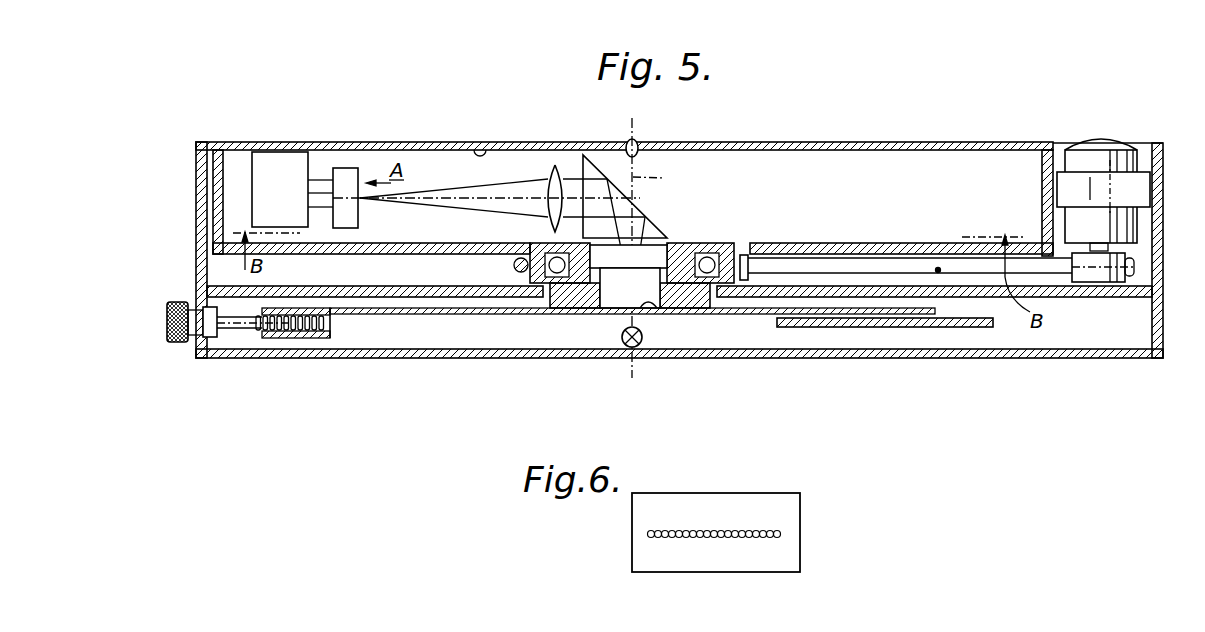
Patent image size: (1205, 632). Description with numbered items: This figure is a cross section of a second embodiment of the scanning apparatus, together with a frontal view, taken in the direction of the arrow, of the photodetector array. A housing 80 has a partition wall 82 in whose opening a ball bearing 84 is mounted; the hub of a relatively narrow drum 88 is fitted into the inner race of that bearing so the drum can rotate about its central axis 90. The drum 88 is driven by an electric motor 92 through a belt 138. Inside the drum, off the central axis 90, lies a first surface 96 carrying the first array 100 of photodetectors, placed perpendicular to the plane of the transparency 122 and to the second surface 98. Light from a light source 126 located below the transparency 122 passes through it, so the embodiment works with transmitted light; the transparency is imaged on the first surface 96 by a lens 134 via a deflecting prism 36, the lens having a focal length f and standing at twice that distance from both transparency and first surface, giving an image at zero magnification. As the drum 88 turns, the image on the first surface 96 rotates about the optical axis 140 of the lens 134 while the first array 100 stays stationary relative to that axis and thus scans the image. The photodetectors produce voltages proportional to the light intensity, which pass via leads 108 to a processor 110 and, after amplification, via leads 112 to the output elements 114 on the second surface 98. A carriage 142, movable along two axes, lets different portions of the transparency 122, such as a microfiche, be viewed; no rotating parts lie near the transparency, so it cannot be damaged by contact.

In FIG. 5, the prism 36 is at (656, 228).
In FIG. 5, the housing 80 is at (1022, 357).
In FIG. 5, the partition wall 82 is at (1065, 293).
In FIG. 5, the ball bearing 84 is at (700, 262).
In FIG. 5, the drum 88 is at (946, 207).
In FIG. 5, the central axis 90 is at (664, 177).
In FIG. 5, the electric motor 92 is at (1100, 228).
In FIG. 5, the first surface 96 is at (358, 212).
In FIG. 6, the first surface 96 is at (749, 500).
In FIG. 5, the second surface 98 is at (1000, 150).
In FIG. 6, the first array 100 is at (720, 545).
In FIG. 5, the leads 108 is at (318, 203).
In FIG. 5, the processor 110 is at (298, 199).
In FIG. 5, the leads 112 is at (488, 147).
In FIG. 5, the output elements 114 is at (637, 142).
In FIG. 5, the transparency 122 is at (650, 308).
In FIG. 5, the light source 126 is at (621, 338).
In FIG. 5, the lens 134 is at (551, 168).
In FIG. 5, the belt 138 is at (513, 266).
In FIG. 5, the optical axis 140 is at (420, 200).
In FIG. 5, the carriage 142 is at (400, 313).